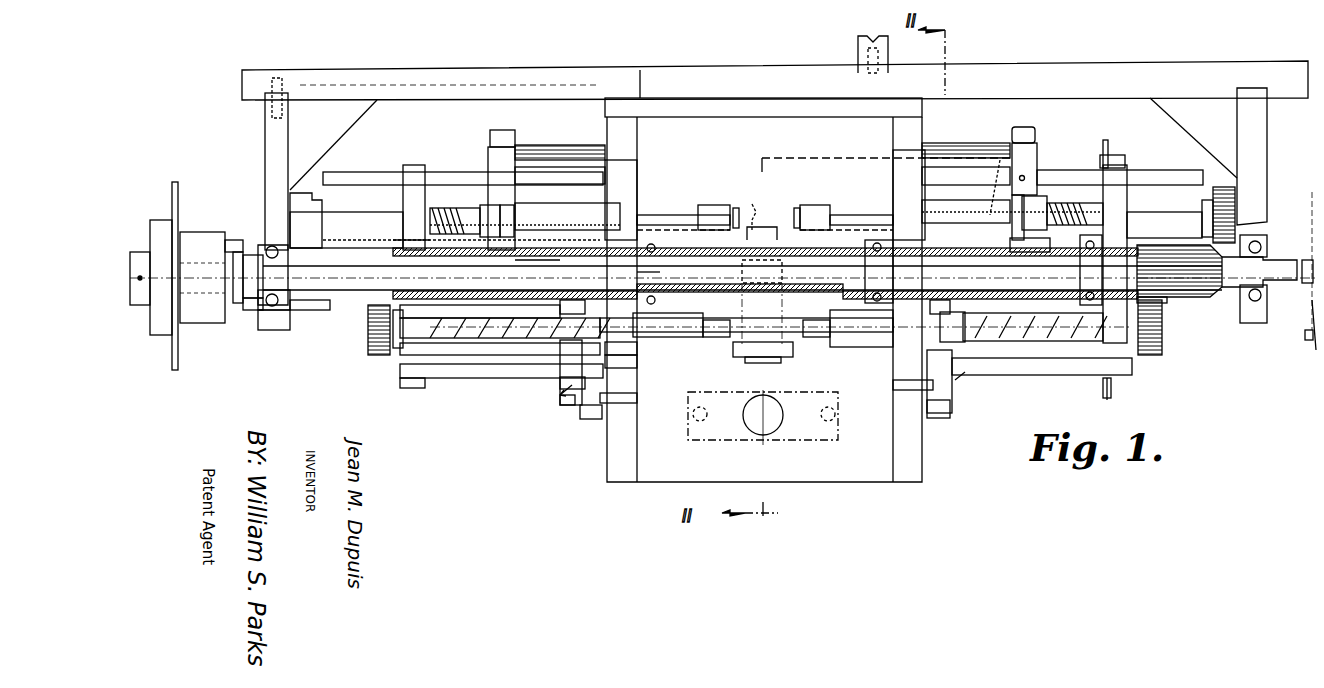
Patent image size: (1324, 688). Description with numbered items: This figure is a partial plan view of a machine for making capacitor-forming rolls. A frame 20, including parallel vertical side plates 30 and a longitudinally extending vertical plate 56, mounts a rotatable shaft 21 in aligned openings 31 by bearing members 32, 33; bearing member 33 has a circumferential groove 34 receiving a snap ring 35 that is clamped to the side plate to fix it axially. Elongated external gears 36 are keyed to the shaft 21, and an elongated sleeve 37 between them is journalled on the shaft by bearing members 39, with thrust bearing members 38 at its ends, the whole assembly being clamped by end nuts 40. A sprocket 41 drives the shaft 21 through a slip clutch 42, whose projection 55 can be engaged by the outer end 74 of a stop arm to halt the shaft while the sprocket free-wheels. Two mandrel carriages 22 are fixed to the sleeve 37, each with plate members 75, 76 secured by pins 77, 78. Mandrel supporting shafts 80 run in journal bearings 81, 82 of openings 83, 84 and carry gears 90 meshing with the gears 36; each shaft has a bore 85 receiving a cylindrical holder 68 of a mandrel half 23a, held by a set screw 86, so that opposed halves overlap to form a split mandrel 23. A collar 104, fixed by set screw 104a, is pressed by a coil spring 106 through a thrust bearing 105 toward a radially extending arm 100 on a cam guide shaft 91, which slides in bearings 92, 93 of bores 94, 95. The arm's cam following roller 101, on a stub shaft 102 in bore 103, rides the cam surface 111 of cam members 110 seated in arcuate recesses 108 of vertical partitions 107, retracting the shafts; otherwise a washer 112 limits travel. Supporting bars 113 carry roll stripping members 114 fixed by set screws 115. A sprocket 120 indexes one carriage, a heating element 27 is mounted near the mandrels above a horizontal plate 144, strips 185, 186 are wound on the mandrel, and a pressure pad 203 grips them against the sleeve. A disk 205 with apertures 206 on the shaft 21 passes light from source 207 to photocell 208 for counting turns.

The frame 20 is at (470, 68).
The longitudinally extending vertical plate 56 is at (532, 70).
The vertical side plate 30 is at (264, 144).
The vertical partition 107 is at (635, 128).
The horizontal plate 144 is at (878, 480).
The rotatable shaft 21 is at (328, 292).
The thrust bearing member 38 is at (395, 258).
The elongated sleeve 37 is at (278, 228).
The bearing member 39 is at (418, 248).
The slip clutch 42 is at (200, 230).
The sprocket 41 is at (178, 182).
The projection 55 is at (233, 242).
The snap ring 35 is at (252, 252).
The outer end of arm 74 is at (245, 228).
The opening 31 is at (290, 306).
The bearing member 32 is at (1262, 246).
The end nut 40 is at (255, 320).
The bearing member 33 is at (258, 322).
The circumferential groove 34 is at (273, 332).
The elongated external gear 36 is at (348, 306).
The cam guide shaft 91 is at (448, 176).
The plate member 76 is at (416, 166).
The gear 90 is at (318, 199).
The opening 84 is at (746, 271).
The set screw 104a is at (766, 252).
The collar 104 is at (497, 250).
The coil spring 106 is at (489, 281).
The mandrel supporting shaft 80 is at (753, 272).
The opening 83 is at (765, 262).
The radially extending arm 100 is at (494, 152).
The cam following roller 101 is at (512, 131).
The cam member 110 is at (572, 146).
The boss or washer 112 is at (605, 166).
The plate member 75 is at (640, 196).
The cam surface 111 is at (998, 192).
The mandrel half 23a is at (765, 207).
The roll stripping member 114 is at (710, 206).
The set screw 115 is at (737, 206).
The strip 186 is at (760, 228).
The strip 185 is at (776, 236).
The supporting bar 113 is at (765, 289).
The pin 77 is at (655, 254).
The pressure pad 203 is at (784, 274).
The journal bearing 81 is at (625, 305).
The thrust bearing 105 is at (573, 300).
The pin 78 is at (482, 255).
The arcuate recess 108 is at (923, 432).
The split mandrel 23 is at (740, 330).
The journal bearing 82 is at (480, 310).
The cylindrical holder 68 is at (836, 312).
The set screw 86 is at (763, 325).
The bearing 93 is at (424, 334).
The bore 95 is at (428, 382).
The bore 103 is at (562, 382).
The bearing 92 is at (638, 366).
The bore 94 is at (640, 384).
The heating element 27 is at (770, 360).
The axially extending bore 85 is at (810, 338).
The mandrel carriage 22 is at (562, 392).
The stub shaft 102 is at (565, 408).
The sprocket 120 is at (1112, 400).
The disk 205 is at (1310, 192).
The aperture 206 is at (1282, 366).
The light source 207 is at (1302, 336).
The photocell 208 is at (1316, 352).